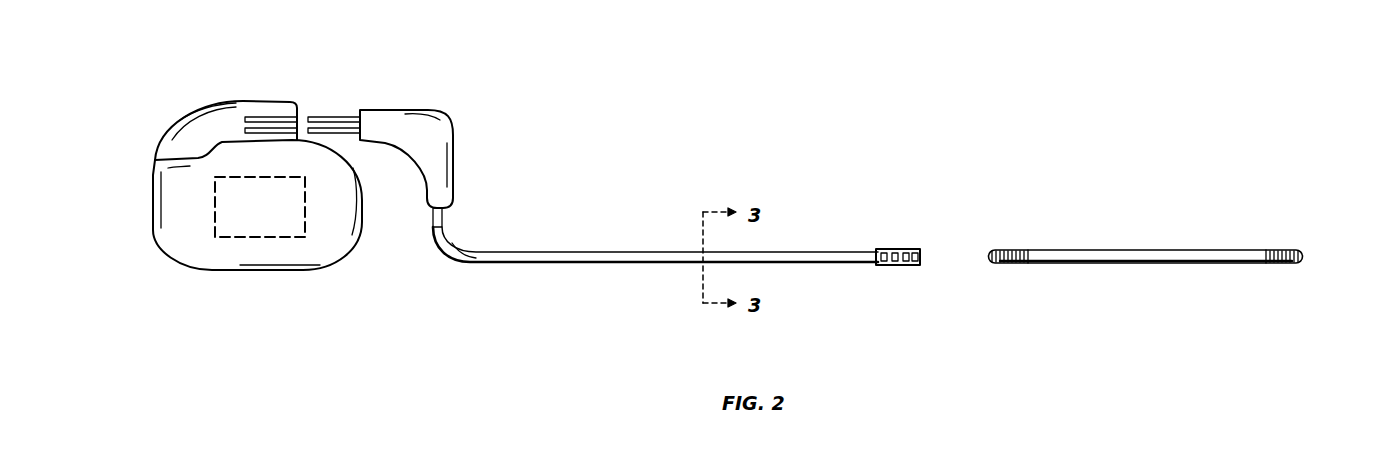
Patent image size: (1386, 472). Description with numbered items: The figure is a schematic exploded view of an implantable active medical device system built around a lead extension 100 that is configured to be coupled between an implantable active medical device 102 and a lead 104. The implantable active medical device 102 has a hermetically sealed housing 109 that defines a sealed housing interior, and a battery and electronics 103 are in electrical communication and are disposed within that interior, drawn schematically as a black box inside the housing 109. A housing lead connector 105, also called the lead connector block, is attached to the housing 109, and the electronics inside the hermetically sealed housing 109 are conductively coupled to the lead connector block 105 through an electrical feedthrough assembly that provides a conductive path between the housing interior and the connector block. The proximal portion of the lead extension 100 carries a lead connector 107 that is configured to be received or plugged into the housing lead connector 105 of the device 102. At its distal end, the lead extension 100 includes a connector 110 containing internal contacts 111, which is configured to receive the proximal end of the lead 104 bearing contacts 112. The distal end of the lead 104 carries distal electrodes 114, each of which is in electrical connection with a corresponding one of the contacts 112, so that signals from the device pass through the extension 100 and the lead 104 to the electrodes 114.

The lead extension 100 is at (585, 250).
The implantable active medical device 102 is at (299, 273).
The battery and electronics 103 is at (215, 218).
The lead 104 is at (1190, 249).
The housing lead connector 105 is at (220, 103).
The lead connector 107 is at (418, 108).
The hermetically sealed housing 109 is at (365, 213).
The connector 110 is at (880, 248).
The internal contacts 111 is at (906, 248).
The contacts 112 is at (1003, 249).
The distal electrodes 114 is at (1276, 250).